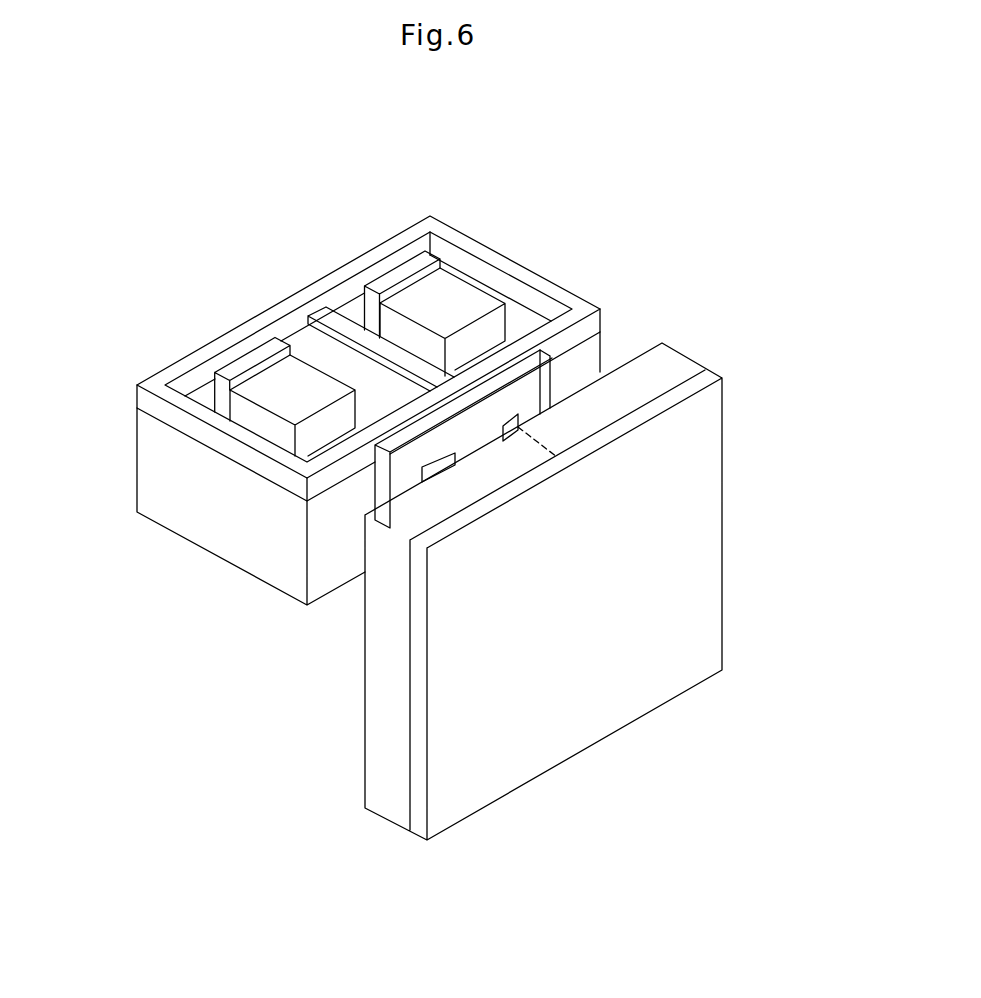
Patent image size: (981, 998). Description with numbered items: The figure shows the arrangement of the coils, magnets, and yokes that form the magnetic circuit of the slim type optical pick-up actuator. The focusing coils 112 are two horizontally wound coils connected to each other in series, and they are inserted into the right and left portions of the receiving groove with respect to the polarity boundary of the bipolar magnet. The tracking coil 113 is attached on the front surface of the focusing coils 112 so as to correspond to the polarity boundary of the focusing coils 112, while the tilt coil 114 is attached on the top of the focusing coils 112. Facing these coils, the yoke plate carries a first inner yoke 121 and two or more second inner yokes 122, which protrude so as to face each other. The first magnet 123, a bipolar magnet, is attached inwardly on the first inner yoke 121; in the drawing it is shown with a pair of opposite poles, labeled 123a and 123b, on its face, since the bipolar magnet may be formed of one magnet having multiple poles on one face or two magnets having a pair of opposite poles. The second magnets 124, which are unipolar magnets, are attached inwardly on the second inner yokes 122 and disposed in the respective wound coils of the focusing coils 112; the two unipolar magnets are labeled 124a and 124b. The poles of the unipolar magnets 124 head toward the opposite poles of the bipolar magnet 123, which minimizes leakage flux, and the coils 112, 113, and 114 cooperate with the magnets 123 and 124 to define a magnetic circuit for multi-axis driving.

The focusing coils 112 is at (152, 460).
The tracking coil 113 is at (530, 360).
The tilt coil 114 is at (158, 385).
The first inner yoke 121 is at (593, 687).
The second inner yokes 122 is at (247, 360).
The first magnet 123 is at (862, 452).
The first cover magnet 123a is at (493, 467).
The second cover magnet 123b is at (647, 383).
The second magnets 124 is at (385, 160).
The first base magnet 124a is at (298, 382).
The second base magnet 124b is at (407, 298).